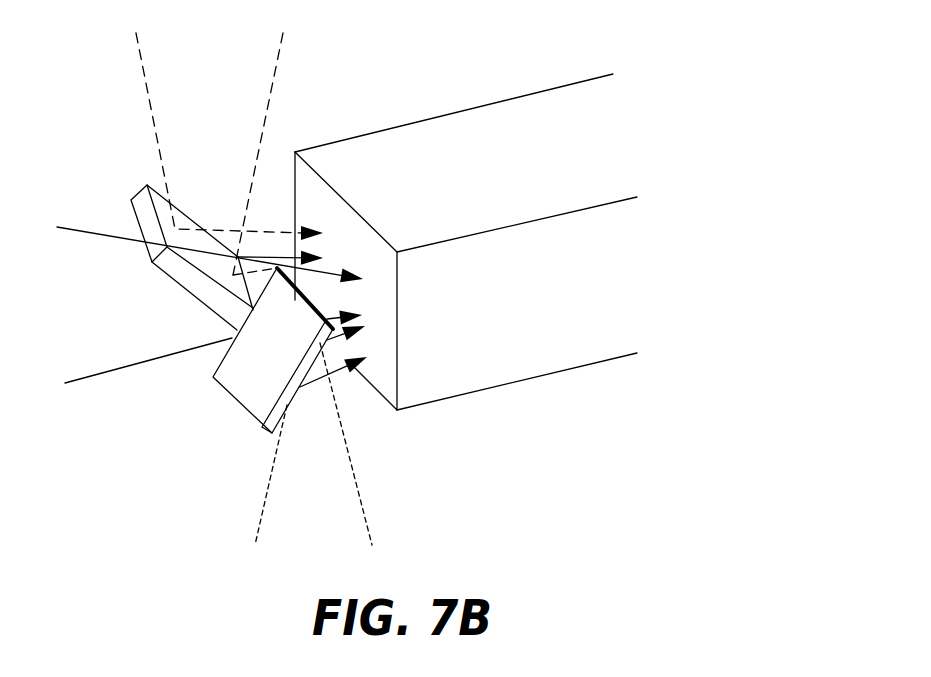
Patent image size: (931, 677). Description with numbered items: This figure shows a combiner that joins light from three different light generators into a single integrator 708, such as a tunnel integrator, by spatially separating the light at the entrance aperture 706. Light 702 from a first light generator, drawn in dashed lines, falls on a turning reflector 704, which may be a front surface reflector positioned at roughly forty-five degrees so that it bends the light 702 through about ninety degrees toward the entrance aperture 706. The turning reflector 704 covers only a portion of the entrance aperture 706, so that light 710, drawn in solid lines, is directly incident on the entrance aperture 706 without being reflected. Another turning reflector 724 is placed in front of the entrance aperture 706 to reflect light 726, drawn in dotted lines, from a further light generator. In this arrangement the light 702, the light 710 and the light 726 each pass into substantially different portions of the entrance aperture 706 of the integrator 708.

The light 702 is at (275, 79).
The turning reflector 704 is at (144, 194).
The entrance aperture 706 is at (294, 175).
The integrator 708 is at (563, 372).
The light 710 is at (107, 238).
The turning reflector 724 is at (229, 393).
The light 726 is at (360, 505).